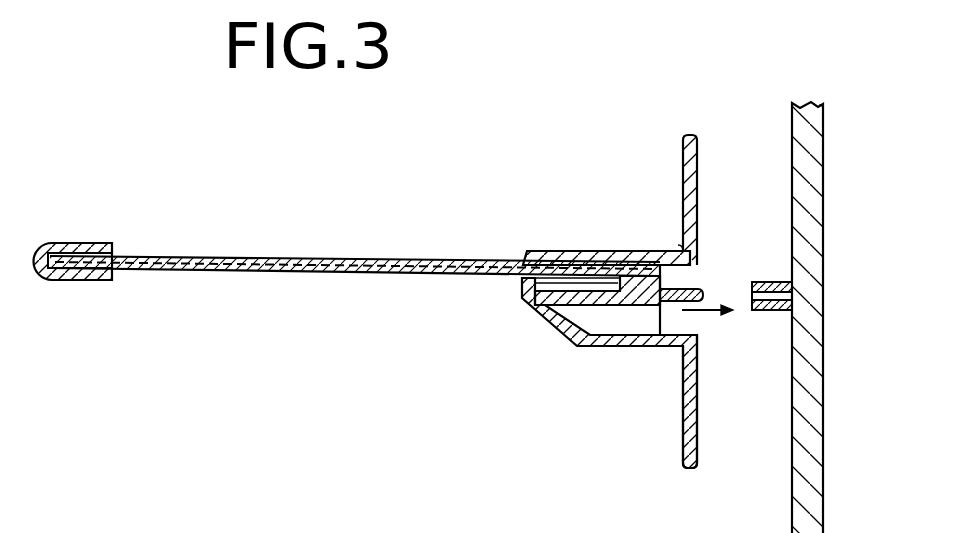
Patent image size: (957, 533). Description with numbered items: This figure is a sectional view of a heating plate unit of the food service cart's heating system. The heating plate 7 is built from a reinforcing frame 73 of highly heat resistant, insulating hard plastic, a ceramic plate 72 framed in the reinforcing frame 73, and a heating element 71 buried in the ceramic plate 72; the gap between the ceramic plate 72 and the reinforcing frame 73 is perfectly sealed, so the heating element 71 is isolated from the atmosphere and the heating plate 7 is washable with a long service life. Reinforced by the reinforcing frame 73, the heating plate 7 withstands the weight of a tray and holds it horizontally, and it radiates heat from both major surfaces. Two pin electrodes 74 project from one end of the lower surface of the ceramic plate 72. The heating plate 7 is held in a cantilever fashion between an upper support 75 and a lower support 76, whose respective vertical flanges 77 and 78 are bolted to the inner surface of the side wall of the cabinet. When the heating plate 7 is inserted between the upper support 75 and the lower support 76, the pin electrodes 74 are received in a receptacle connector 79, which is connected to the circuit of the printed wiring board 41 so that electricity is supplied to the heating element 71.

The heating plate 7 is at (355, 253).
The heating element 71 is at (247, 256).
The ceramic plate 72 is at (293, 273).
The reinforcing frame 73 is at (70, 242).
The pin electrodes 74 is at (644, 262).
The upper support 75 is at (586, 250).
The lower support 76 is at (570, 346).
The vertical flange 77 is at (683, 167).
The vertical flange 78 is at (681, 420).
The receptacle connector 79 is at (772, 283).
The printed wiring board 41 is at (817, 263).